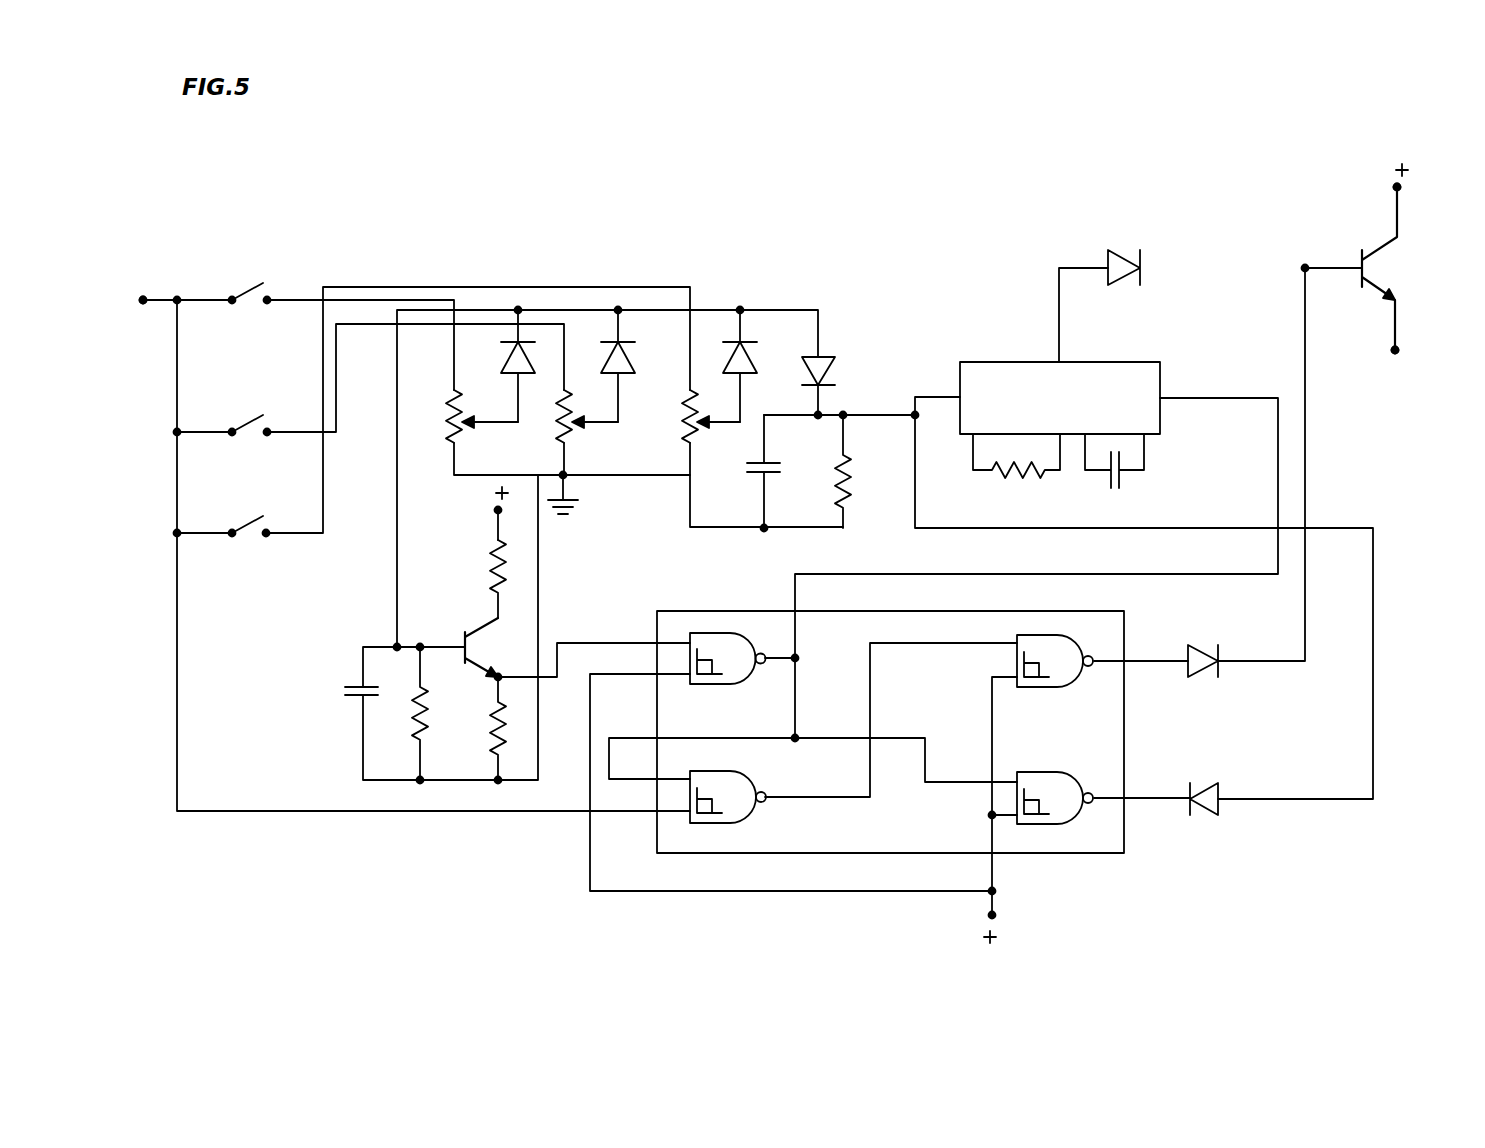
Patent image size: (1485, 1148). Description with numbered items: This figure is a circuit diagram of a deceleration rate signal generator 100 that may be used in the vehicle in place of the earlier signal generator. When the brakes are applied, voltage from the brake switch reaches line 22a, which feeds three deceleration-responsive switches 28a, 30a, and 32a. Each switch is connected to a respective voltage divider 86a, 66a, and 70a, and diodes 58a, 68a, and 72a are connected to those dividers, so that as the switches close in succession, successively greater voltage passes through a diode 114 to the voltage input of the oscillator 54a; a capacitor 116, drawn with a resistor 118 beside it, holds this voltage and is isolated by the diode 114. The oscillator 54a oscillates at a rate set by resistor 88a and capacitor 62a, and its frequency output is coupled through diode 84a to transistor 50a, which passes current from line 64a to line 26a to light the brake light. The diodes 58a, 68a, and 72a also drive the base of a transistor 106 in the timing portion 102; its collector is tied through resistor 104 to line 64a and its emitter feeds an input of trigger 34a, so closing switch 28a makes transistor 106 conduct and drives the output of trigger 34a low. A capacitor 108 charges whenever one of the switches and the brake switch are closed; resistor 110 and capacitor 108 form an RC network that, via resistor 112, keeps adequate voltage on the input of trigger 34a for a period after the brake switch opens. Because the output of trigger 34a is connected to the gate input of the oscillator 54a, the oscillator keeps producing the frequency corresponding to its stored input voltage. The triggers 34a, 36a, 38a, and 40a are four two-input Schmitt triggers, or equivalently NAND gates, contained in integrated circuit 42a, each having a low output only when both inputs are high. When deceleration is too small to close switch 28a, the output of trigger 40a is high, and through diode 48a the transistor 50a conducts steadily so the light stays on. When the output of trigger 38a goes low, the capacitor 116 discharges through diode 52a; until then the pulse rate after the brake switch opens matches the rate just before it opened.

The deceleration rate signal generator 100 is at (1233, 142).
The line 22a is at (163, 298).
The switch 28a is at (261, 282).
The switch 30a is at (263, 420).
The switch 32a is at (263, 528).
The voltage divider 86a is at (450, 410).
The voltage divider 66a is at (553, 422).
The voltage divider 70a is at (688, 418).
The diode 58a is at (507, 351).
The diode 68a is at (605, 367).
The diode 72a is at (755, 368).
The diode 114 is at (833, 358).
The capacitor 116 is at (758, 465).
The resistor 118 is at (848, 495).
The oscillator 54a is at (1095, 361).
The resistor 88a is at (1007, 473).
The capacitor 62a is at (1123, 482).
The diode 84a is at (1117, 250).
The transistor 50a is at (1360, 263).
The line 64a is at (1397, 223).
The line 26a is at (1397, 333).
The timing circuit 102 is at (327, 663).
The resistor 104 is at (493, 557).
The transistor 106 is at (473, 630).
The capacitor 108 is at (353, 697).
The resistor 110 is at (413, 718).
The resistor 112 is at (490, 730).
The trigger 34a is at (720, 686).
The trigger 36a is at (737, 824).
The trigger 40a is at (1040, 688).
The trigger 38a is at (1052, 825).
The integrated circuit 42a is at (1103, 857).
The diode 48a is at (1218, 652).
The diode 52a is at (1222, 792).